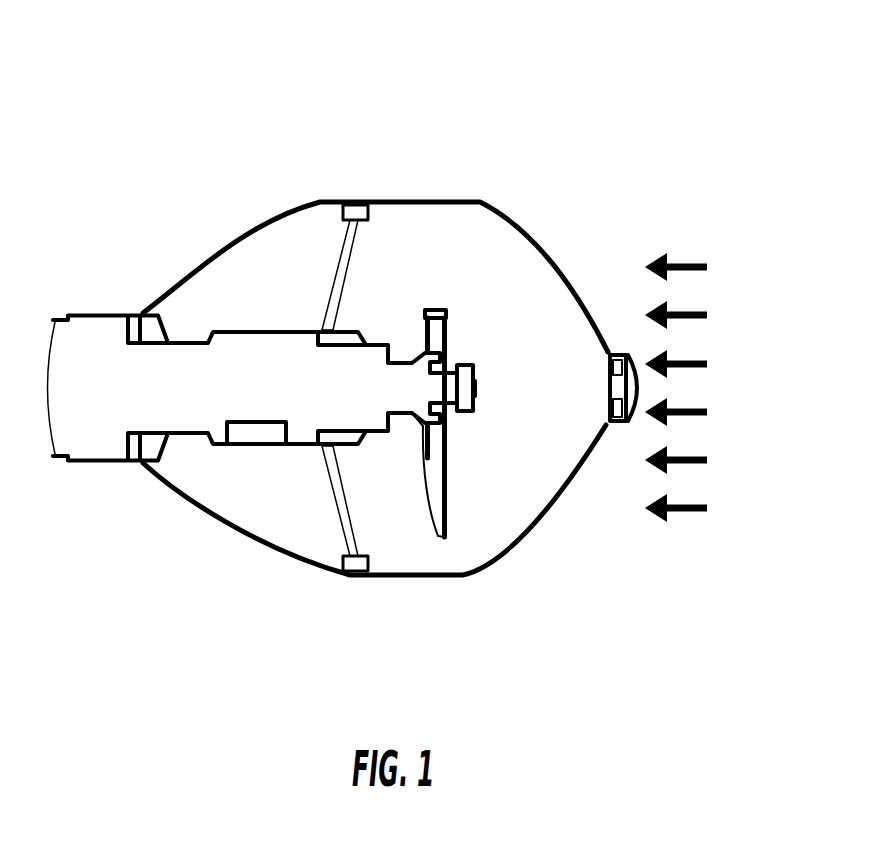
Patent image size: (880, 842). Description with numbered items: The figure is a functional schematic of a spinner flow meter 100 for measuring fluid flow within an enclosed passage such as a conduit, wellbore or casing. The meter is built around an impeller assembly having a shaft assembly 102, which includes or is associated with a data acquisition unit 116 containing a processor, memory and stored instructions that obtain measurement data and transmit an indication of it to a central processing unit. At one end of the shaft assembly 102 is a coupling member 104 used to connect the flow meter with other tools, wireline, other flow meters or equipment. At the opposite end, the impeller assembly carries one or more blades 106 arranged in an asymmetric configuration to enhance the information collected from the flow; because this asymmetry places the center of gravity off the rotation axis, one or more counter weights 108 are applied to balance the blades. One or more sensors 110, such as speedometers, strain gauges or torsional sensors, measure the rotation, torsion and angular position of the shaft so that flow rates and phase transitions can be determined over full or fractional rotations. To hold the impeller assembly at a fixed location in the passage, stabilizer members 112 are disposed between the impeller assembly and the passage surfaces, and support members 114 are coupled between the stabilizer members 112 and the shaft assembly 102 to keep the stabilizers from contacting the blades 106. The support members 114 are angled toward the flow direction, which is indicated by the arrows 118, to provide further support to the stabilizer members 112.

The spinner flow meter 100 is at (129, 114).
The shaft assembly 102 is at (235, 332).
The coupling member 104 is at (95, 313).
The blades 106 is at (430, 527).
The counter weights 108 is at (440, 308).
The sensors 110 is at (478, 385).
The stabilizer members 112 is at (247, 536).
The support members 114 is at (328, 222).
The data acquisition unit 116 is at (242, 432).
The arrows 118 is at (695, 260).